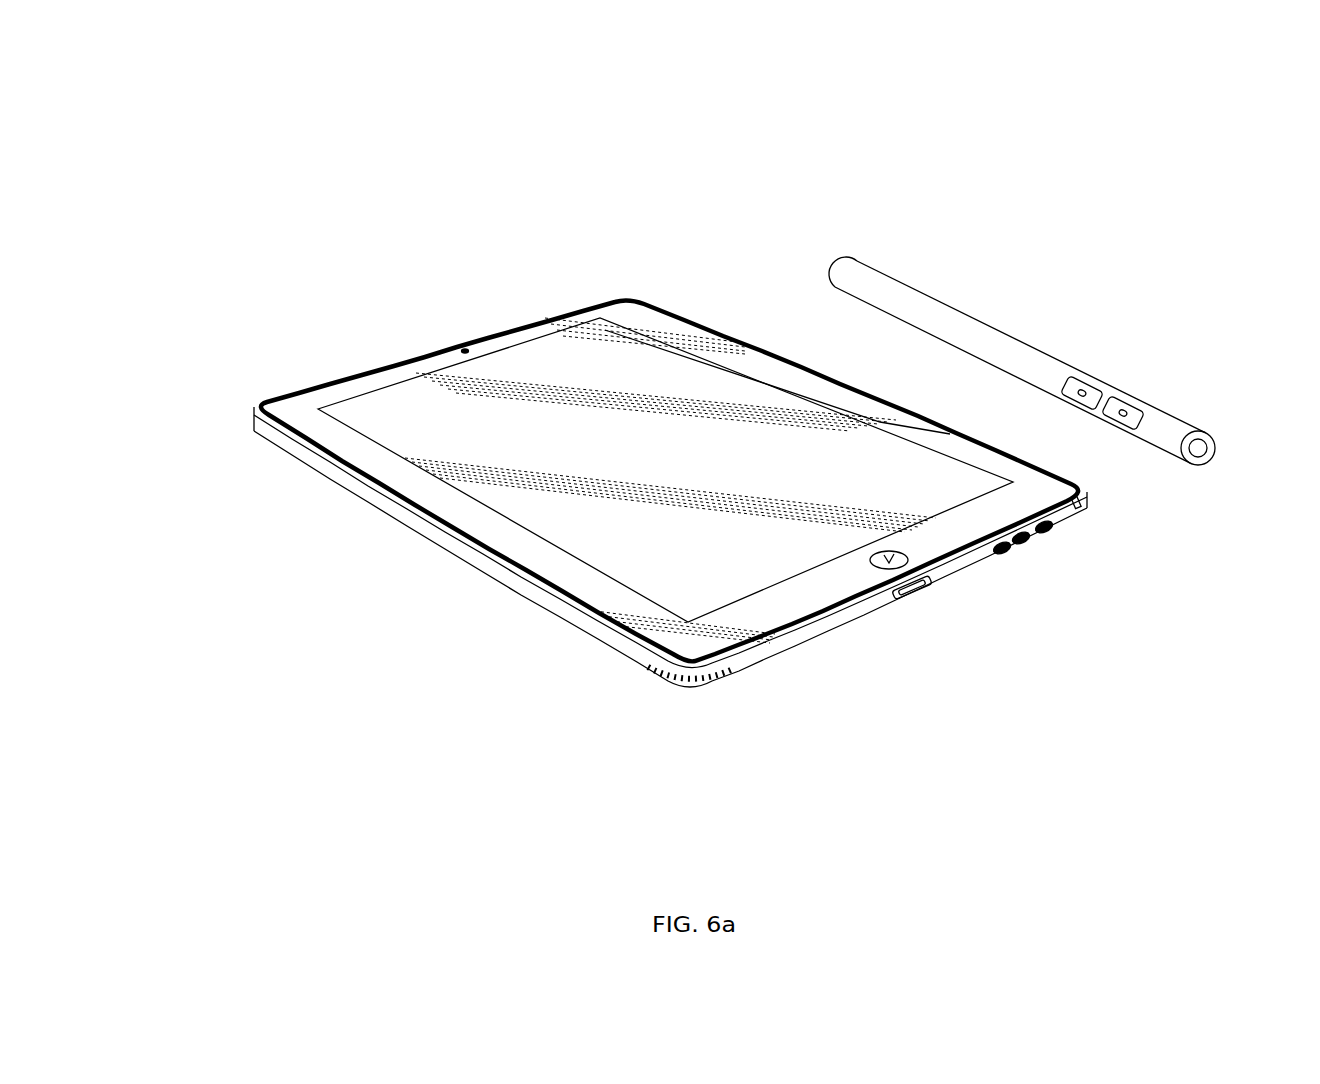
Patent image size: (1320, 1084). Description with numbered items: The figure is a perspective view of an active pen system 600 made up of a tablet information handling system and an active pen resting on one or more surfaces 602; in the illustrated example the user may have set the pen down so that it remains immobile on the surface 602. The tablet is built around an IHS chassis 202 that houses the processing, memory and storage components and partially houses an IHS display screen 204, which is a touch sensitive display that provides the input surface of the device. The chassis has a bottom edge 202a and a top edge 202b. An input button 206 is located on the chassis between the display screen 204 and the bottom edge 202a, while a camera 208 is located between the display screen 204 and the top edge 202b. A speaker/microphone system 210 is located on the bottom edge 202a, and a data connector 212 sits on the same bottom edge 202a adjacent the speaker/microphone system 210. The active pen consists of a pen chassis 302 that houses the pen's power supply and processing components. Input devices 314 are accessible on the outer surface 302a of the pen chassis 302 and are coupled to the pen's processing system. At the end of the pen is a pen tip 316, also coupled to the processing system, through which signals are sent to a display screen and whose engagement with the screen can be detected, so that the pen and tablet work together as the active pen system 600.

The active pen system 600 is at (1170, 145).
The surface 602 is at (340, 705).
The IHS chassis 202 is at (253, 405).
The bottom edge 202a is at (827, 625).
The top edge 202b is at (390, 360).
The IHS display screen 204 is at (661, 440).
The input button 206 is at (884, 550).
The camera 208 is at (466, 348).
The speaker/microphone system 210 is at (1005, 551).
The data connector 212 is at (913, 597).
The pen chassis 302 is at (857, 261).
The outer surface 302a is at (976, 340).
The input devices 314 is at (1128, 400).
The pen tip 316 is at (1200, 431).